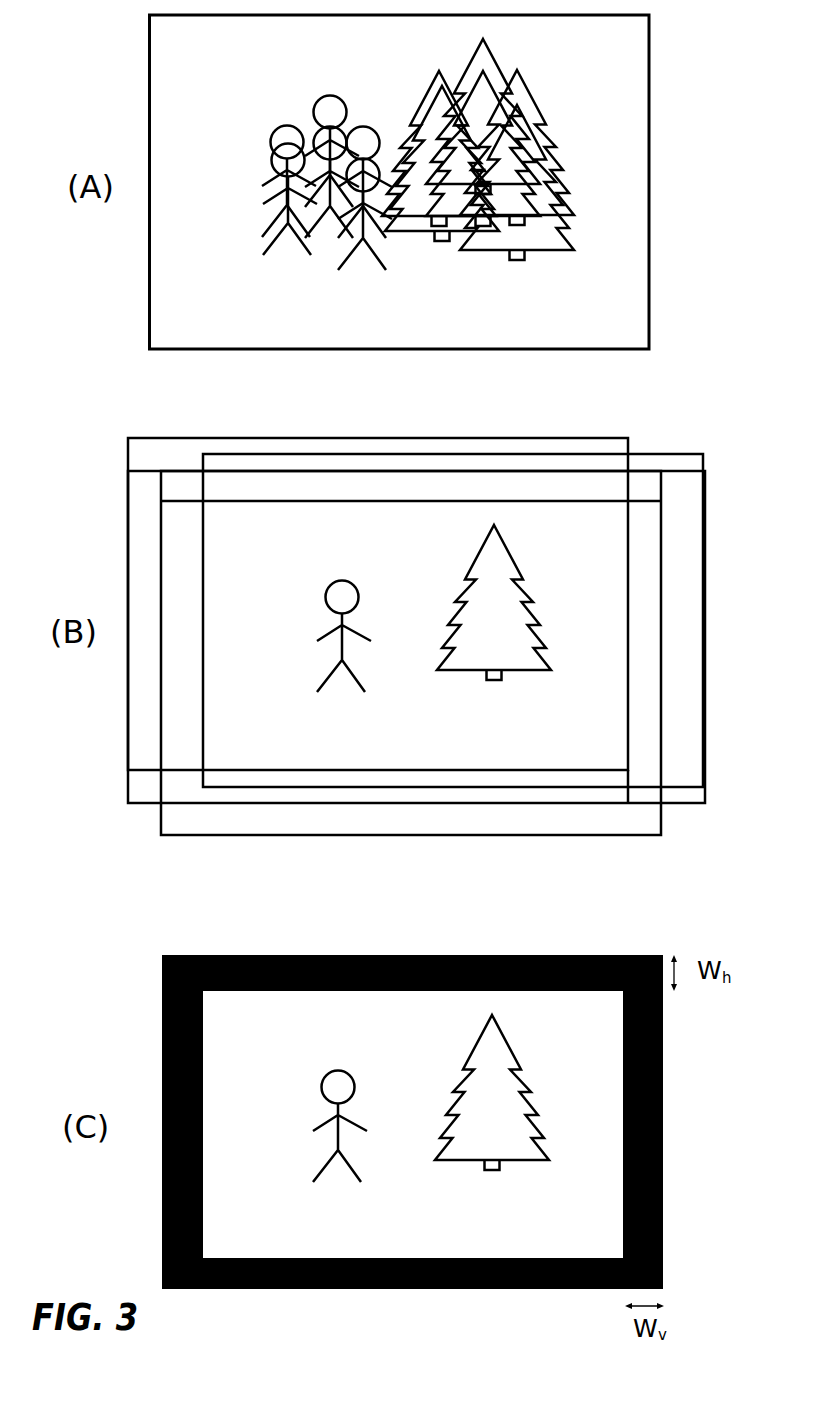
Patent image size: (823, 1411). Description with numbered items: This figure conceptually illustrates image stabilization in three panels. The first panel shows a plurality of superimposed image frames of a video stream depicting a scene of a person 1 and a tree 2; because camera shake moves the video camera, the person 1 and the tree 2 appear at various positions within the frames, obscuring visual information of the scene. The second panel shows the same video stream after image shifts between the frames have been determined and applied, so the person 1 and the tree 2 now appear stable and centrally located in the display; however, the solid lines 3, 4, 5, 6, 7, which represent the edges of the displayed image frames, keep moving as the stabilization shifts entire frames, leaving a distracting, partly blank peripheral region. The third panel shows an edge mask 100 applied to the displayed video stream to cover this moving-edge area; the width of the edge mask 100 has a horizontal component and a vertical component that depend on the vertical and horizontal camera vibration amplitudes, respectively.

The person 1 is at (270, 140).
The tree 2 is at (520, 106).
The solid line 3 is at (311, 770).
The solid line 4 is at (231, 787).
The solid line 5 is at (396, 803).
The solid line 6 is at (660, 688).
The solid line 7 is at (398, 503).
The edge mask 100 is at (228, 954).